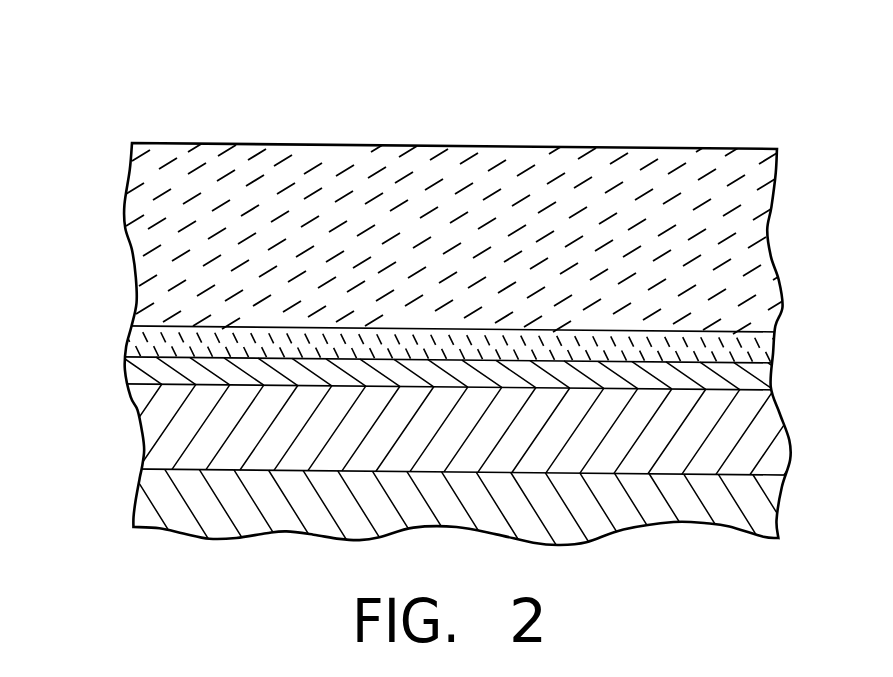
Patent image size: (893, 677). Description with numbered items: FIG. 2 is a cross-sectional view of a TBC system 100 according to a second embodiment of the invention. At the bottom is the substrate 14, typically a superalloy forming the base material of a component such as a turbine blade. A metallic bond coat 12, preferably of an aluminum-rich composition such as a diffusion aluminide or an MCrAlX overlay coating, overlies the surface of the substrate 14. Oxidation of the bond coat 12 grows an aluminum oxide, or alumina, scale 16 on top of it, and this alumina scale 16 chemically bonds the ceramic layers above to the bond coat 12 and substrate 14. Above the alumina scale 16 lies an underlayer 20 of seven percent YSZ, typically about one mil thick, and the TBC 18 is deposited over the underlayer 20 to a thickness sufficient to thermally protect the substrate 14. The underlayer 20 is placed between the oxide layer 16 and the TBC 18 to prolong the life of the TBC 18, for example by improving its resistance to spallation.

The TBC system 100 is at (131, 83).
The TBC 18 is at (127, 241).
The underlayer 20 is at (128, 335).
The alumina scale 16 is at (127, 374).
The metallic bond coat 12 is at (140, 420).
The substrate 14 is at (138, 497).